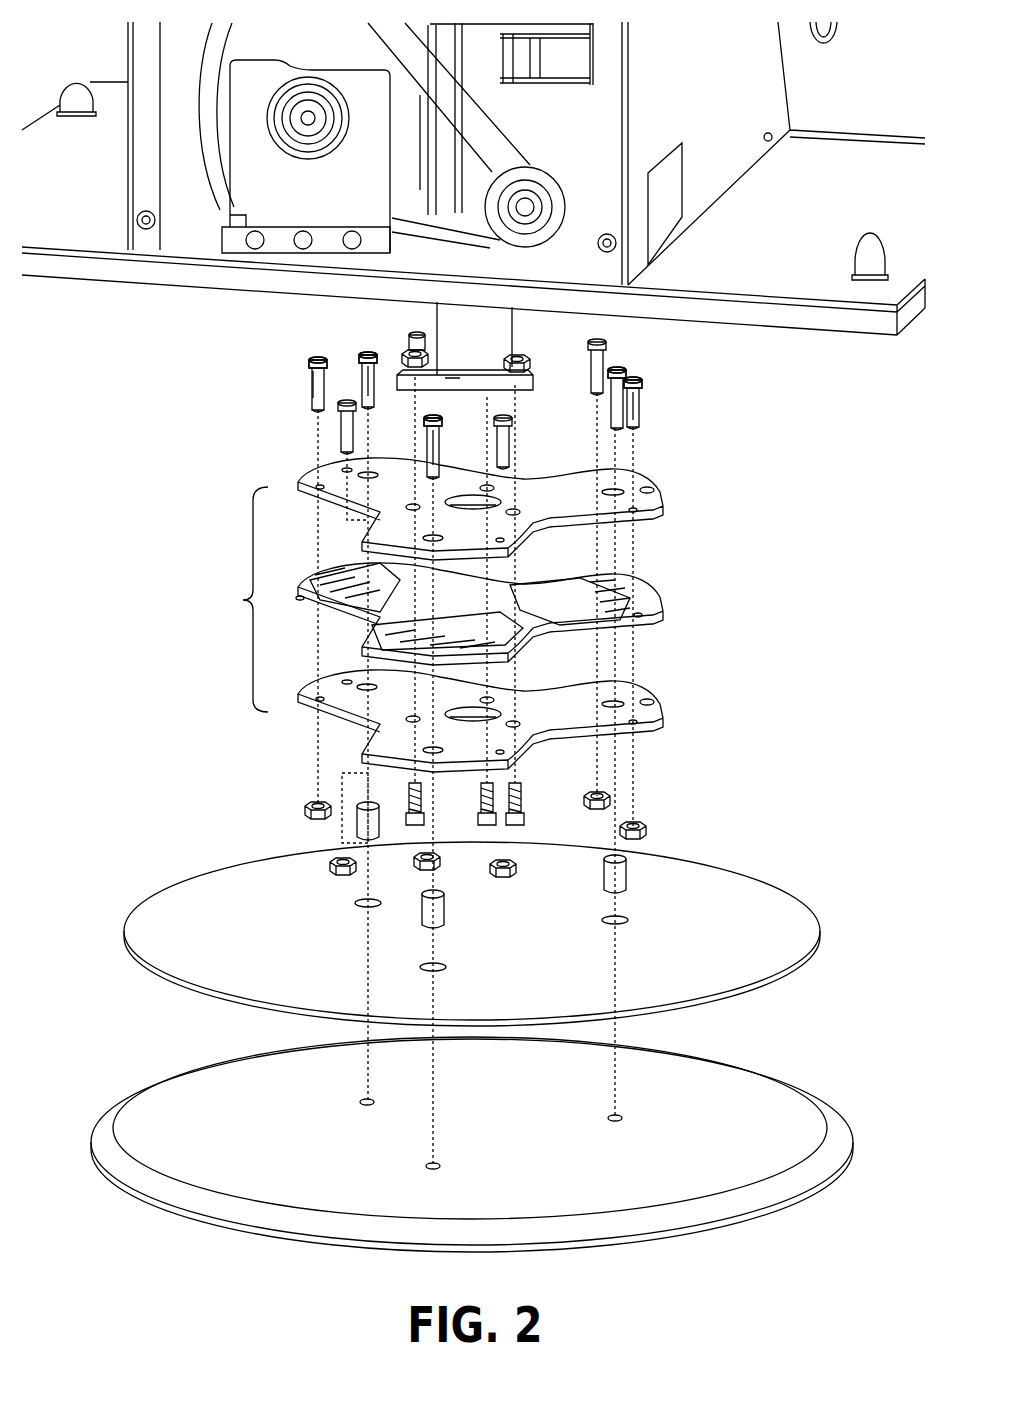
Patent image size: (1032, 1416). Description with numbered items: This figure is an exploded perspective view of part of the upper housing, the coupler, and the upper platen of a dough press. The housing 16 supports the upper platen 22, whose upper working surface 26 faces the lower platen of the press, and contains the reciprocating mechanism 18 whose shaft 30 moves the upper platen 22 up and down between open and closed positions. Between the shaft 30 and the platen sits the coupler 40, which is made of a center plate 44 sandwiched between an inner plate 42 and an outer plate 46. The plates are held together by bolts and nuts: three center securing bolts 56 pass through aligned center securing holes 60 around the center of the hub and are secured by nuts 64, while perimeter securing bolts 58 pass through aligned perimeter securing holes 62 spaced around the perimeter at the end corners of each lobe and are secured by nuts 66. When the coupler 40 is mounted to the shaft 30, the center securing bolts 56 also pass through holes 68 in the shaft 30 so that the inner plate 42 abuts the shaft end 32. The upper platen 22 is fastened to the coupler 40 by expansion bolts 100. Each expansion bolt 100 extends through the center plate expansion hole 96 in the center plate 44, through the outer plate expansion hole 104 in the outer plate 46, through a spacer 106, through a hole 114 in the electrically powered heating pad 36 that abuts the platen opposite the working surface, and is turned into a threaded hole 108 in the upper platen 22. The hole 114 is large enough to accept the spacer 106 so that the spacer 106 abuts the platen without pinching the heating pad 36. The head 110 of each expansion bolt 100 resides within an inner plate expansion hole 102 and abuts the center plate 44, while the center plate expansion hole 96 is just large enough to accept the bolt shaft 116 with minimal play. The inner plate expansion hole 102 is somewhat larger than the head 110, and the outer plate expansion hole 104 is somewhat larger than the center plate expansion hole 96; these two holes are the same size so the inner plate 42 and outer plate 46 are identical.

The housing 16 is at (802, 336).
The reciprocating mechanism 18 is at (546, 54).
The upper platen 22 is at (778, 1055).
The upper working surface 26 is at (696, 1236).
The shaft 30 is at (512, 318).
The shaft end 32 is at (440, 392).
The heating pad 36 is at (788, 865).
The coupler 40 is at (226, 599).
The inner plate 42 is at (665, 500).
The center plate 44 is at (662, 605).
The outer plate 46 is at (660, 718).
The center securing bolts 56 is at (408, 805).
The perimeter securing bolts 58 is at (312, 392).
The center securing holes 60 is at (492, 486).
The perimeter securing holes 62 is at (318, 490).
The nuts 64 is at (408, 342).
The nuts 66 is at (305, 812).
The holes 68 is at (430, 358).
The center plate expansion hole 96 is at (378, 570).
The expansion bolts 100 is at (350, 376).
The inner plate expansion hole 102 is at (608, 490).
The outer plate expansion hole 104 is at (364, 686).
The spacer 106 is at (380, 835).
The threaded hole 108 is at (360, 1104).
The head 110 is at (362, 355).
The hole 114 is at (355, 905).
The shaft 116 is at (310, 376).